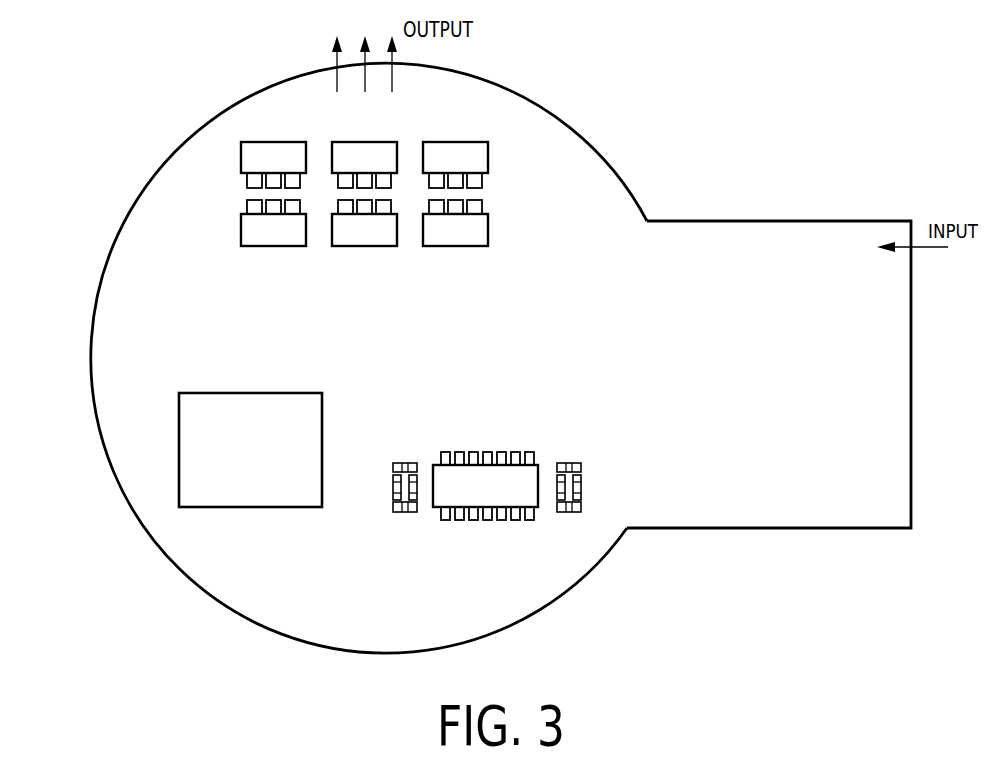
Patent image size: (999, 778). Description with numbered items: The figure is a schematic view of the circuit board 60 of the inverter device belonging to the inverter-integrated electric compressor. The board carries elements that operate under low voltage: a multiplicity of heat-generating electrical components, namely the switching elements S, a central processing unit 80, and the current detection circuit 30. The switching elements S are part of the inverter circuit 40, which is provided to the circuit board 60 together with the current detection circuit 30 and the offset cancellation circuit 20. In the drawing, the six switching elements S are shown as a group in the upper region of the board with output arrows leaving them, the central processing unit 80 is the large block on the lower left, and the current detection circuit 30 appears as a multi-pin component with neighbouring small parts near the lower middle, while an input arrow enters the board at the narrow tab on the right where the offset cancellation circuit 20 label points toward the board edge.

The offset cancellation circuit 20 is at (486, 358).
The current detection circuit 30 is at (416, 531).
The inverter circuit 40 is at (188, 256).
The circuit board 60 is at (761, 528).
The central processing unit (CPU) 80 is at (277, 507).
The switching elements S is at (224, 130).